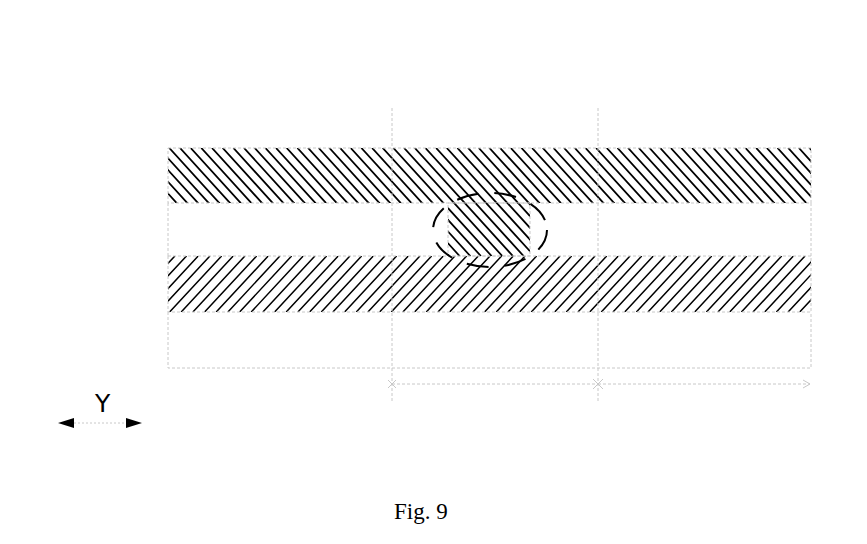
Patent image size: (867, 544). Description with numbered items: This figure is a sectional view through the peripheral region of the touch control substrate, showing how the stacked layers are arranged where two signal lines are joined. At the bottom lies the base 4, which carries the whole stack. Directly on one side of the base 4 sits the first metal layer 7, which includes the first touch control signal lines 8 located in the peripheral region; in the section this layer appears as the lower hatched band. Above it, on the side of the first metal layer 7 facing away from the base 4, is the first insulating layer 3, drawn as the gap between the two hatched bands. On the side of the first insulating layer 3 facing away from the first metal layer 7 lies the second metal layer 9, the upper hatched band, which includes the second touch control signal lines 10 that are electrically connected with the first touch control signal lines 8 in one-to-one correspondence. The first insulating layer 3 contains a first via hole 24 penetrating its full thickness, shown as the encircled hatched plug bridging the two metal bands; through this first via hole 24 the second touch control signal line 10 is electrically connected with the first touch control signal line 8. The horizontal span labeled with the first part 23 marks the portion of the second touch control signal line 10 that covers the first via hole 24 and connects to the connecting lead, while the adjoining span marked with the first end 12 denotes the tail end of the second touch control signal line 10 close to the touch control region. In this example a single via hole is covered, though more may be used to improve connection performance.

The second metal layer 9 is at (205, 179).
The second touch control signal line 10 is at (489, 175).
The first insulating layer 3 is at (197, 233).
The first metal layer 7 is at (207, 305).
The first touch control signal line 8 is at (489, 284).
The base 4 is at (223, 343).
The first via hole 24 is at (491, 195).
The first part of the second touch control signal line 23 is at (493, 263).
The first end of the second touch control signal line 12 is at (701, 263).